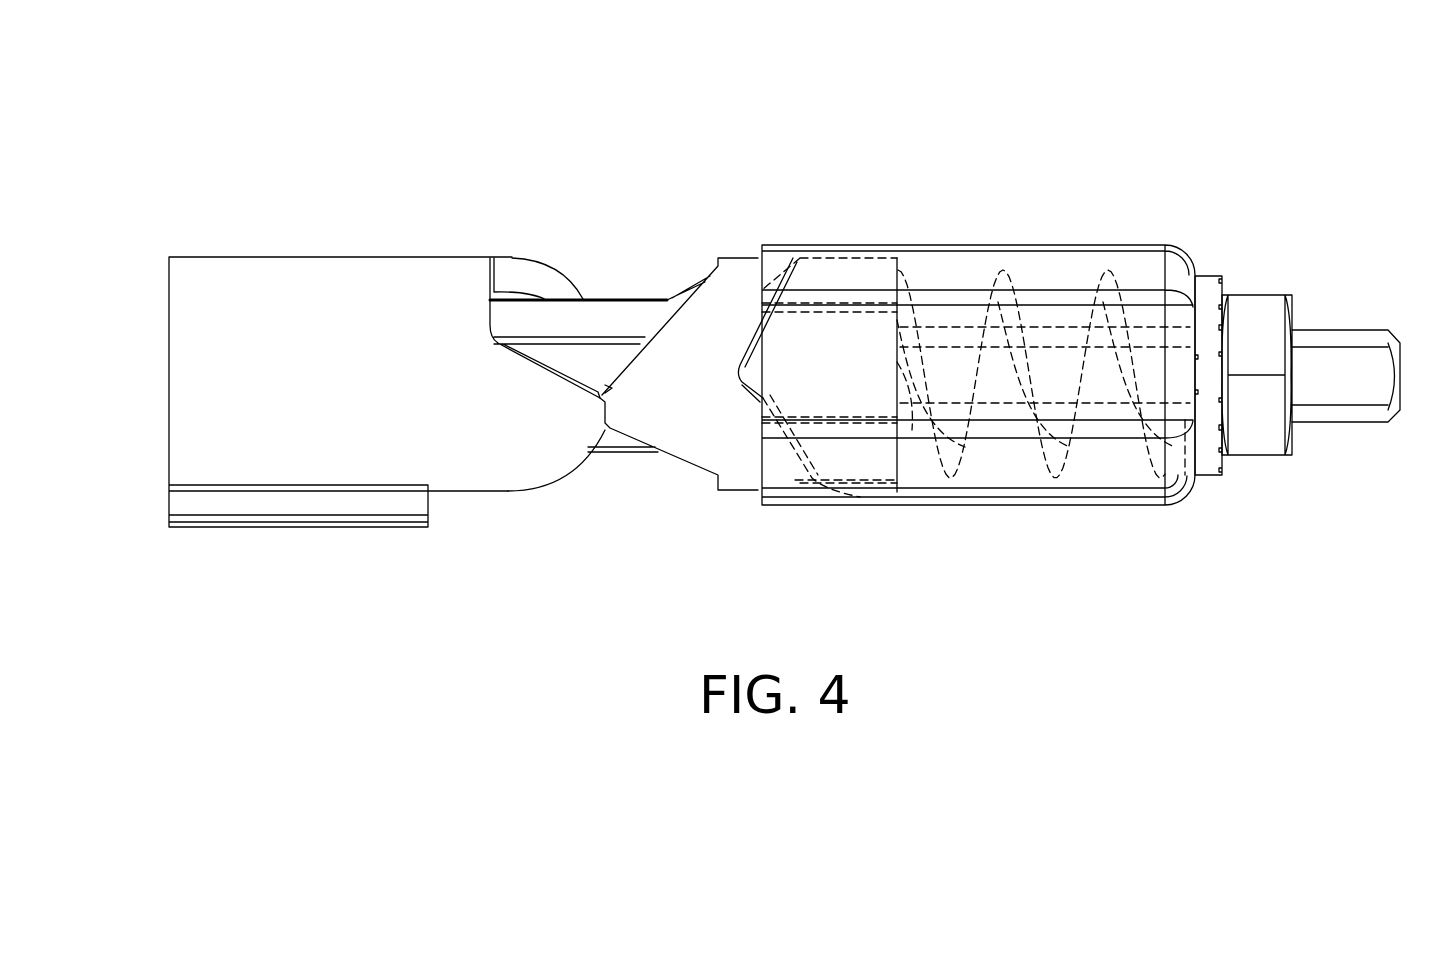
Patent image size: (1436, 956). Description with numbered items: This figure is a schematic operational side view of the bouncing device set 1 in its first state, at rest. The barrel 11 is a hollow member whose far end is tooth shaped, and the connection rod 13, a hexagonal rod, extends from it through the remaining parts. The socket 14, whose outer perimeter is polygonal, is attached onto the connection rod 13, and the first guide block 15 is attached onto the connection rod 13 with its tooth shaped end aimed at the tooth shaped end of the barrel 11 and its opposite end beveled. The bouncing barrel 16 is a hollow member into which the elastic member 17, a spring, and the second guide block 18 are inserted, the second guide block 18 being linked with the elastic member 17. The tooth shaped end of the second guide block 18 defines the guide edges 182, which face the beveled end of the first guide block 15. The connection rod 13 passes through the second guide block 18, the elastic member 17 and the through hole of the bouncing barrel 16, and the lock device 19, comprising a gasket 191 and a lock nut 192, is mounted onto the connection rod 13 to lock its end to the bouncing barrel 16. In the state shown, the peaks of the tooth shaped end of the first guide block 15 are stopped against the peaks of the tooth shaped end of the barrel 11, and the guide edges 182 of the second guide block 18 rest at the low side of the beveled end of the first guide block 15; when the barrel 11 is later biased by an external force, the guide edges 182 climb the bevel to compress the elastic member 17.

The bouncing device set 1 is at (695, 57).
The barrel 11 is at (325, 290).
The connection rod 13 is at (1349, 367).
The socket 14 is at (605, 318).
The first guide block 15 is at (695, 425).
The bouncing barrel 16 is at (948, 267).
The elastic member 17 is at (1003, 283).
The second guide block 18 is at (838, 273).
The guide edges 182 is at (752, 362).
The lock device 19 is at (1242, 312).
The gasket 191 is at (1212, 295).
The lock nut 192 is at (1252, 317).